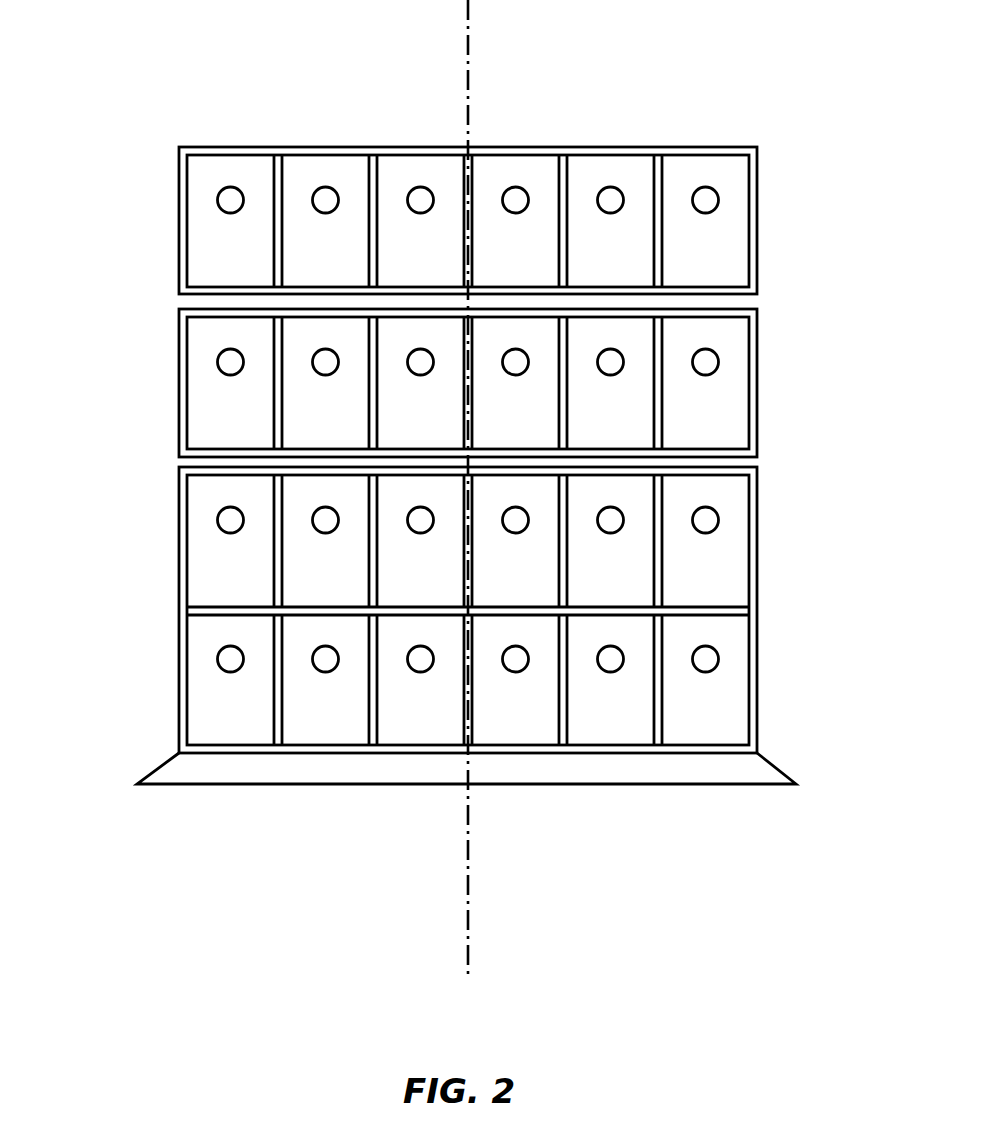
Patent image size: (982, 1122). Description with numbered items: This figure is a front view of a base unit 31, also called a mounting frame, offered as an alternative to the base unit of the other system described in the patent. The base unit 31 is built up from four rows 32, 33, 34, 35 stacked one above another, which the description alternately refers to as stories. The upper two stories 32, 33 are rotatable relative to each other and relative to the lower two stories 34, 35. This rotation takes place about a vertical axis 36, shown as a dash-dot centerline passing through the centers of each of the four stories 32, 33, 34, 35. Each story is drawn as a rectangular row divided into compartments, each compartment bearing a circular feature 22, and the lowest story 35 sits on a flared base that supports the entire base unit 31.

The cell / battery unit 22 is at (217, 200).
The base unit 31 is at (113, 145).
The first row 32 is at (472, 220).
The second row 33 is at (765, 312).
The third row 34 is at (765, 470).
The fourth row 35 is at (765, 614).
The vertical axis 36 is at (468, 37).